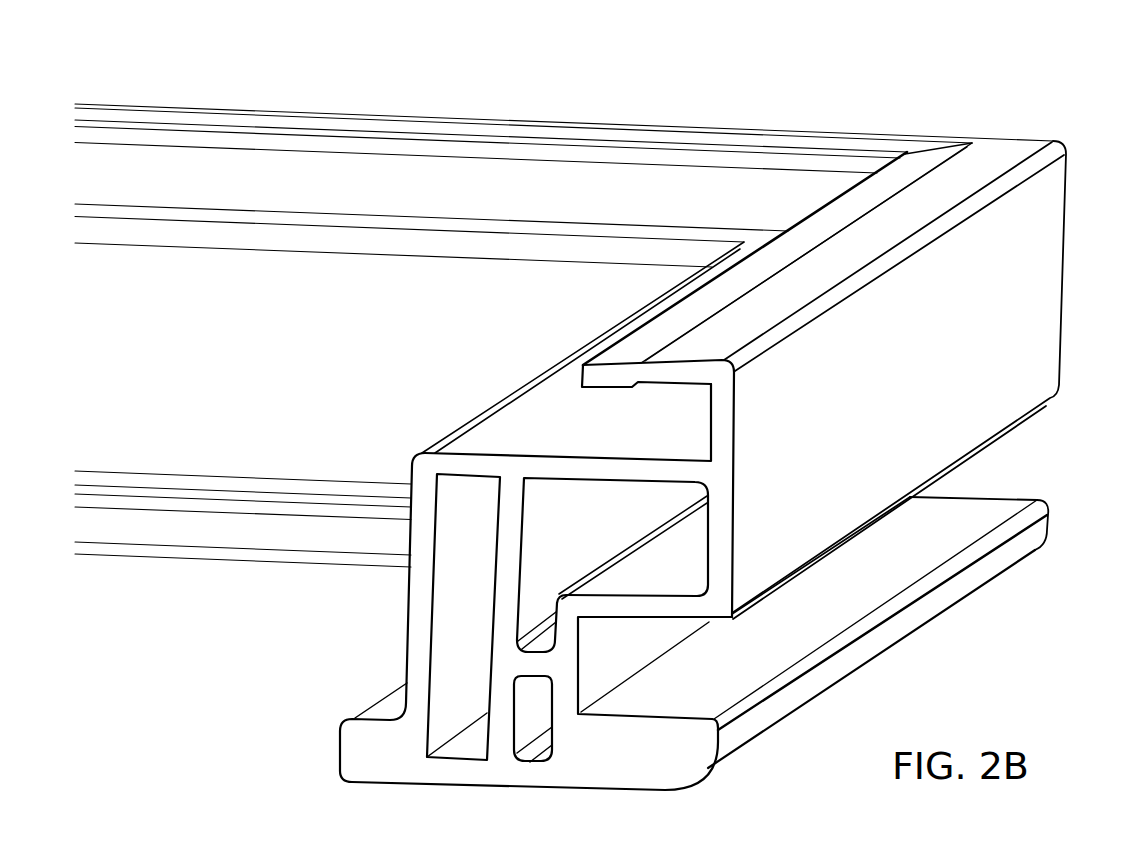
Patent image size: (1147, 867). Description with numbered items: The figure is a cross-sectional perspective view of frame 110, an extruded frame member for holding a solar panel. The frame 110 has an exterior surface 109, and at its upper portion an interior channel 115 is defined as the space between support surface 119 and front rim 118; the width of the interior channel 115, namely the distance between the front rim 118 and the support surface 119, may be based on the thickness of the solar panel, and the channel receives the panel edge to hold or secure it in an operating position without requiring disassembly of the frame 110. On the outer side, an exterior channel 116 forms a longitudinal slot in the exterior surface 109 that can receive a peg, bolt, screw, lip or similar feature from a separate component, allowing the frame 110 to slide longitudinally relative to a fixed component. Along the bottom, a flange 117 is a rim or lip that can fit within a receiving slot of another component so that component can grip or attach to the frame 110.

The exterior surface 109 is at (1048, 337).
The frame 110 is at (128, 628).
The interior channel 115 is at (673, 434).
The exterior channel 116 is at (704, 682).
The flange 117 is at (358, 751).
The front rim 118 is at (638, 348).
The support surface 119 is at (484, 437).